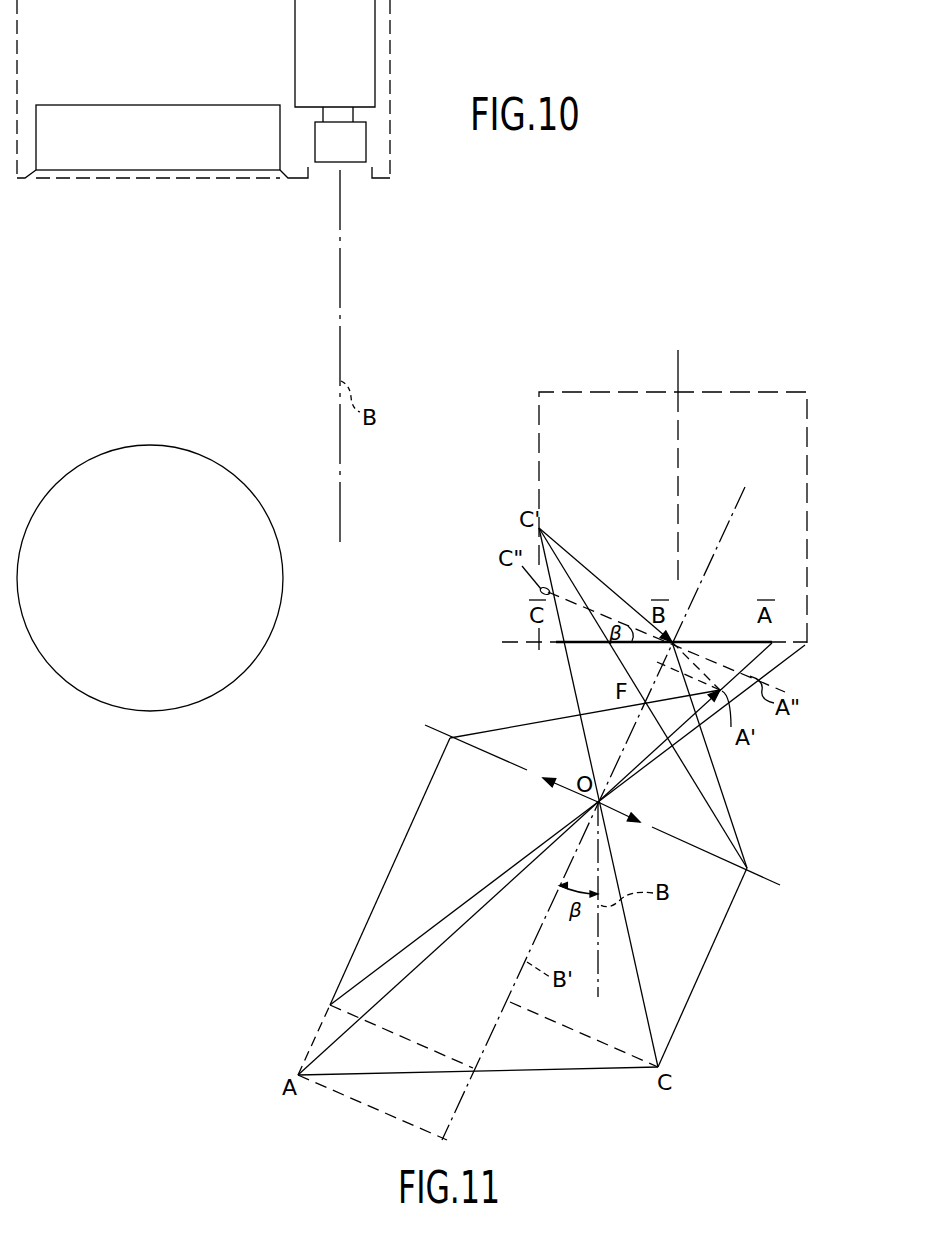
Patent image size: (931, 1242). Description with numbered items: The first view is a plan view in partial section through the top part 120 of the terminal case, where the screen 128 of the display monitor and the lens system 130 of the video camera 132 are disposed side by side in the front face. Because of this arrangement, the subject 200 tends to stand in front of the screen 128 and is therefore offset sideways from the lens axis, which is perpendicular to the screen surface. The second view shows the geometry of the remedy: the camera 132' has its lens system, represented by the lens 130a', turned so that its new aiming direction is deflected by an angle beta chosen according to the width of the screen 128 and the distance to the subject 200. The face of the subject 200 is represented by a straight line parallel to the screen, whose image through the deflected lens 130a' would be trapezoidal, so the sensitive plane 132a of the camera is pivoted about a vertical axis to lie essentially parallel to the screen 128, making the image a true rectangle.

In FIG. 10, the top part of the case 120 is at (171, 47).
In FIG. 10, the camera 132 is at (368, 61).
In FIG. 10, the lens system 130 is at (360, 143).
In FIG. 10, the screen 128 is at (135, 163).
In FIG. 10, the subject 200 is at (92, 460).
In FIG. 11, the subject 200 is at (563, 1087).
In FIG. 11, the camera 132' is at (673, 497).
In FIG. 11, the sensitive plane of the camera 132a is at (543, 649).
In FIG. 11, the lens 130a' is at (602, 805).